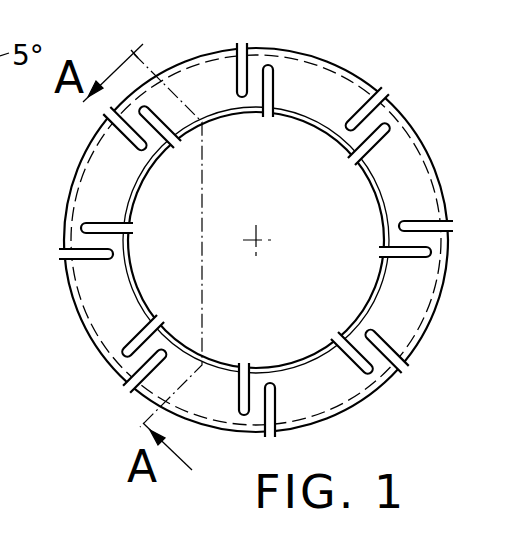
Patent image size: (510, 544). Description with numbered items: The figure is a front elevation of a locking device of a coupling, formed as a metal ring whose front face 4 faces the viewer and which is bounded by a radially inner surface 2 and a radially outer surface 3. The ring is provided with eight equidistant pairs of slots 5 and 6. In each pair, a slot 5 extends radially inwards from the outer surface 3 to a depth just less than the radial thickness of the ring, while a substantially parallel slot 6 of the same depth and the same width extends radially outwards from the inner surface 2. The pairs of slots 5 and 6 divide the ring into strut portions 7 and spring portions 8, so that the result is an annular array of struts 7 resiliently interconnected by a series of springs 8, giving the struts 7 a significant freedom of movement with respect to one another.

The radially inner surface 2 is at (140, 197).
The radially outer surface 3 is at (158, 77).
The front face 4 is at (330, 97).
The slot 5 is at (62, 256).
The slot 6 is at (133, 230).
The strut portion 7 is at (405, 308).
The spring portion 8 is at (350, 137).